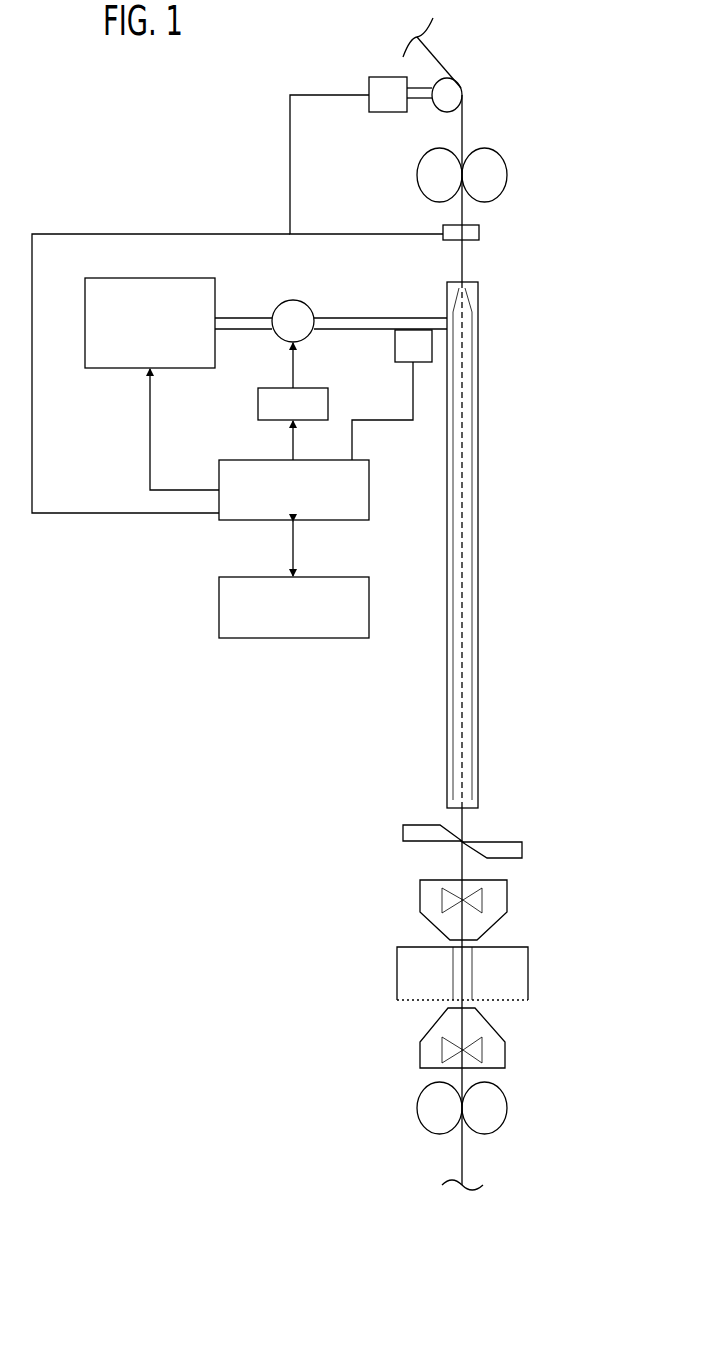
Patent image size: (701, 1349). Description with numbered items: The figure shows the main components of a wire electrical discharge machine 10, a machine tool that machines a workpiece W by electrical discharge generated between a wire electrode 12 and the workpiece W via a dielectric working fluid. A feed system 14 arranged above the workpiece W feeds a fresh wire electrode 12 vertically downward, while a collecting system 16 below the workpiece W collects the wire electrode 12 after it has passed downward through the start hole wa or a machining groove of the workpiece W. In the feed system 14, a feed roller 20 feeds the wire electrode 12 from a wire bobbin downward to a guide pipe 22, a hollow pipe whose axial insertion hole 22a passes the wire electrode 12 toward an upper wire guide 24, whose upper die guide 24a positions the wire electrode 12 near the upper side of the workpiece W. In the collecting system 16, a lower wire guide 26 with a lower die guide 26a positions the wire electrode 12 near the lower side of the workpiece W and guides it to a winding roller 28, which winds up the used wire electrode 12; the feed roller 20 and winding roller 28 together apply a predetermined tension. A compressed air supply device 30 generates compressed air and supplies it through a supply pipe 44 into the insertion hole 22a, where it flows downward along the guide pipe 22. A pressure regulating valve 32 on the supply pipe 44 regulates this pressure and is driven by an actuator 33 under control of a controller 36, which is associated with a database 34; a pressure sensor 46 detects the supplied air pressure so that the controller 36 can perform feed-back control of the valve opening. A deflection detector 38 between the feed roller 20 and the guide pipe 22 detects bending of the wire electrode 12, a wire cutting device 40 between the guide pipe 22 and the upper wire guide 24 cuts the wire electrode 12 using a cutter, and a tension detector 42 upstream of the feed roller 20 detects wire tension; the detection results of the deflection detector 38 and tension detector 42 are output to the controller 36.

The wire electrical discharge machine 10 is at (200, 104).
The wire electrode 12 is at (465, 110).
The feed system 14 is at (507, 545).
The collecting system 16 is at (467, 1119).
The feed roller 20 is at (510, 180).
The guide pipe 22 is at (487, 545).
The insertion hole 22a is at (467, 405).
The upper wire guide 24 is at (456, 905).
The upper die guide 24a is at (440, 897).
The lower wire guide 26 is at (458, 1038).
The lower die guide 26a is at (440, 1048).
The winding roller 28 is at (420, 1113).
The compressed air supply device 30 is at (157, 278).
The pressure regulating valve 32 is at (285, 298).
The actuator 33 is at (328, 398).
The database 34 is at (369, 585).
The controller 36 is at (369, 465).
The deflection detector 38 is at (479, 232).
The wire cutting device 40 is at (403, 826).
The tension detector 42 is at (380, 112).
The supply pipe 44 is at (348, 318).
The pressure sensor 46 is at (395, 345).
The workpiece W is at (503, 969).
The start hole wa is at (472, 983).